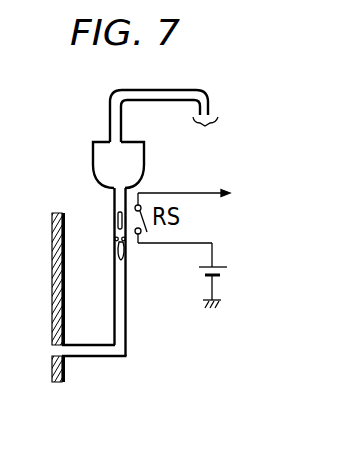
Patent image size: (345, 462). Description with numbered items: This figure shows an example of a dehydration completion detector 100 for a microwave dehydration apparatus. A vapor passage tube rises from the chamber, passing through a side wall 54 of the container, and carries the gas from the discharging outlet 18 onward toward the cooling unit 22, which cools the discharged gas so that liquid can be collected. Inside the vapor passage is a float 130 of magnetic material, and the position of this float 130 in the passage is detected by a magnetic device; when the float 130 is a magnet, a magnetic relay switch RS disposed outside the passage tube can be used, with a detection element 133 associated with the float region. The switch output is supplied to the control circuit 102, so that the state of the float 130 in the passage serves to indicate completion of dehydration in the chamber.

The liquid level sensing assembly 100 is at (159, 365).
The float 130 is at (113, 222).
The magnet 133 is at (119, 250).
The side wall 54 is at (63, 273).
The discharging outlet 18 is at (57, 352).
The cooling unit 22 is at (208, 137).
The control circuit 102 is at (225, 192).